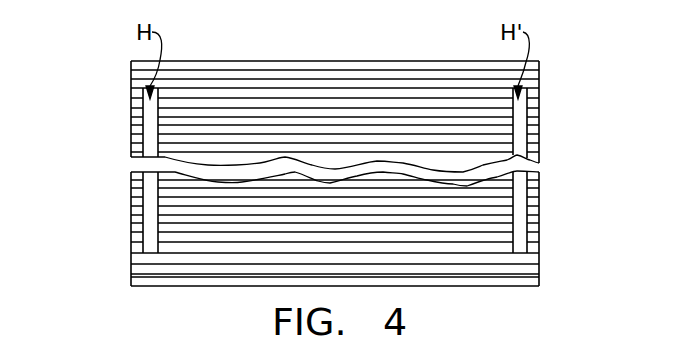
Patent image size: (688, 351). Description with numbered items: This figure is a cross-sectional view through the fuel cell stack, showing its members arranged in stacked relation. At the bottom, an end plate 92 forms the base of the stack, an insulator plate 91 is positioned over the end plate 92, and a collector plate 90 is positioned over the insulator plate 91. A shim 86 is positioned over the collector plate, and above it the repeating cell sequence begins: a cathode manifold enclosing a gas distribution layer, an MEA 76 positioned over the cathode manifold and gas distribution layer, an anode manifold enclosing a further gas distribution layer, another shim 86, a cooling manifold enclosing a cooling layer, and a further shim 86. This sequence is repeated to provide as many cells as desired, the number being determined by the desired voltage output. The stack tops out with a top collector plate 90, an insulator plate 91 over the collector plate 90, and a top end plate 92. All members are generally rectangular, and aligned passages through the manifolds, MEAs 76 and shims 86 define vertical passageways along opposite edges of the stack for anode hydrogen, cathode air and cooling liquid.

The end plate 92 is at (538, 65).
The insulator plate 91 is at (539, 72).
The collector plate 90 is at (540, 88).
The shim 86 is at (539, 218).
The MEA 76 is at (131, 233).